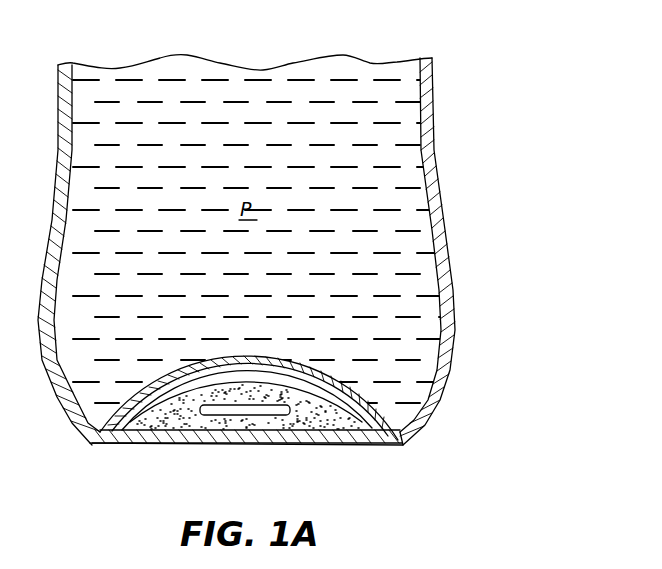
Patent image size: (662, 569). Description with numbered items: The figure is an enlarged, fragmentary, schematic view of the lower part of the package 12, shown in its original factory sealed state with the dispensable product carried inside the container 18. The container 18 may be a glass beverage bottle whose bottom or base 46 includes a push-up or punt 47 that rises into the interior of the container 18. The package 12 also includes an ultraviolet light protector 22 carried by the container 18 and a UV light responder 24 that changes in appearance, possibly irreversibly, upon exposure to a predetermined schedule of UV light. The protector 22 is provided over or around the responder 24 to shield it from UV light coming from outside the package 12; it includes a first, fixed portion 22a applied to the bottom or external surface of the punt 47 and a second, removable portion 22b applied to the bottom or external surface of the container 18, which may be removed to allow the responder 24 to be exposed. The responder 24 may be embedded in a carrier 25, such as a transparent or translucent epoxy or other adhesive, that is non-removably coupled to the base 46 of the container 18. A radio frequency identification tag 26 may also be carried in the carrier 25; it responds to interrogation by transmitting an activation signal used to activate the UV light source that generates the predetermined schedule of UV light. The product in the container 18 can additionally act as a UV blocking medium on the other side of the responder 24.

The package 12 is at (458, 97).
The container 18 is at (36, 138).
The ultraviolet (UV) light protector 22 is at (400, 445).
The first portion of the UV light protector 22a is at (368, 402).
The removable portion of the UV light protector 22b is at (347, 433).
The UV light responder 24 is at (140, 417).
The carrier 25 is at (177, 420).
The radio frequency identification (RFID) tag 26 is at (250, 413).
The base 46 is at (92, 455).
The punt 47 is at (302, 363).